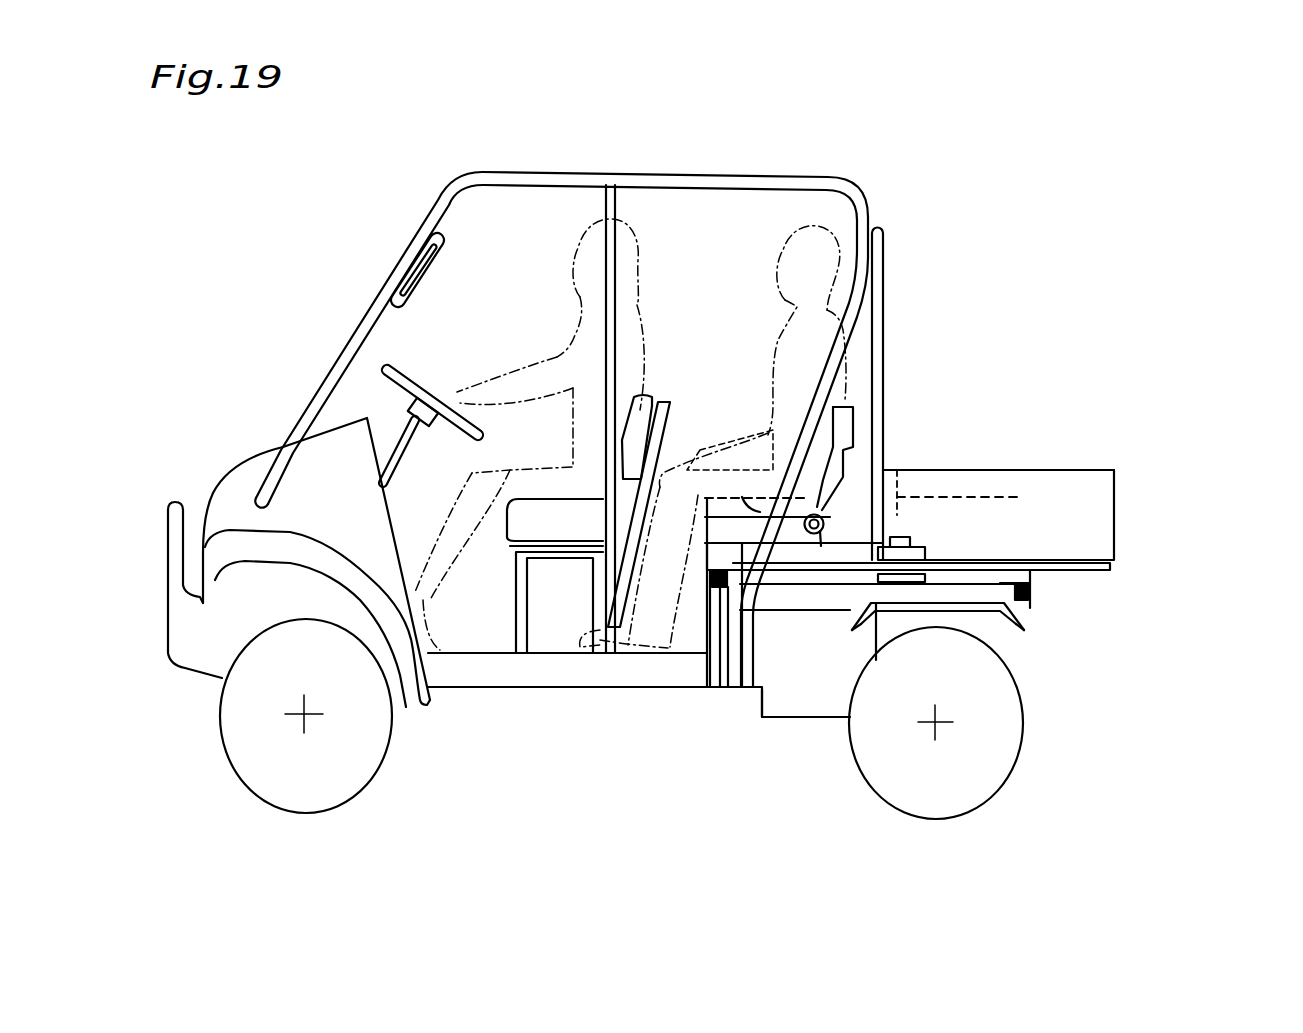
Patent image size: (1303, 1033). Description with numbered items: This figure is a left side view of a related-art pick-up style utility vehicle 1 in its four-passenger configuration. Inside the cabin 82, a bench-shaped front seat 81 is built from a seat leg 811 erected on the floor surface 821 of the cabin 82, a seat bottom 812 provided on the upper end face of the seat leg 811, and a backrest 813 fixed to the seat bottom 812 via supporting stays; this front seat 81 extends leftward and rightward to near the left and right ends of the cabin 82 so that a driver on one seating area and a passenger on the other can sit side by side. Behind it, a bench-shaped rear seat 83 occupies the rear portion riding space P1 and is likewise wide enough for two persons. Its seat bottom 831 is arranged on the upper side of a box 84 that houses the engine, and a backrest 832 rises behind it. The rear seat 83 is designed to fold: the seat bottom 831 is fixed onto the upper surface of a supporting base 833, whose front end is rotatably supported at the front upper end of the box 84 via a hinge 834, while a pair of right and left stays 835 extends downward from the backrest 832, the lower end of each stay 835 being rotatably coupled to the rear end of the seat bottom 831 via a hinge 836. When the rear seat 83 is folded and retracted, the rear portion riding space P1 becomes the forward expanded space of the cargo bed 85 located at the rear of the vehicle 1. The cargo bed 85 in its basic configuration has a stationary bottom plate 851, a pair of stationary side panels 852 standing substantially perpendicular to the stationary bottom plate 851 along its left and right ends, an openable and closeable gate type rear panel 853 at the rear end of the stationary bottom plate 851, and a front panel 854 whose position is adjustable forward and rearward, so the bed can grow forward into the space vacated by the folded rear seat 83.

The utility vehicle 1 is at (828, 153).
The front seat 81 is at (497, 547).
The seat leg 811 is at (520, 648).
The seat bottom 812 is at (527, 512).
The backrest 813 is at (620, 483).
The cabin 82 is at (437, 327).
The floor surface 821 is at (557, 657).
The rear seat 83 is at (722, 511).
The seat bottom 831 is at (780, 540).
The backrest 832 is at (840, 423).
The supporting base 833 is at (710, 543).
The hinge 834 is at (716, 605).
The stays 835 is at (822, 492).
The hinge 836 is at (830, 517).
The box 84 is at (773, 670).
The cargo bed 85 is at (1093, 455).
The stationary bottom plate 851 is at (1100, 572).
The stationary side panels 852 is at (1050, 477).
The rear panel 853 is at (1115, 512).
The front panel 854 is at (990, 492).
The rear portion riding space P1 is at (753, 345).